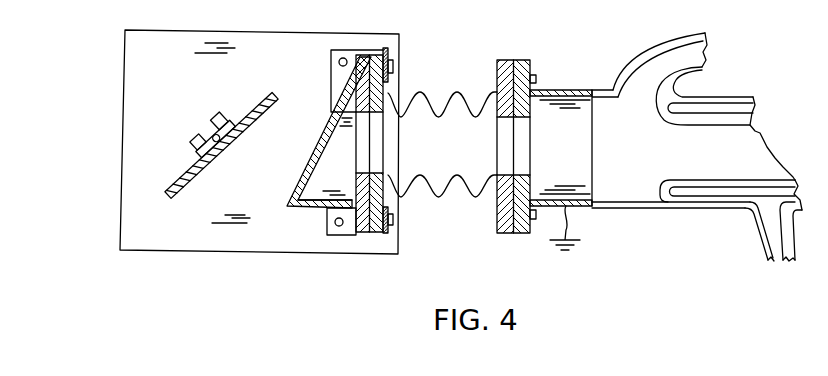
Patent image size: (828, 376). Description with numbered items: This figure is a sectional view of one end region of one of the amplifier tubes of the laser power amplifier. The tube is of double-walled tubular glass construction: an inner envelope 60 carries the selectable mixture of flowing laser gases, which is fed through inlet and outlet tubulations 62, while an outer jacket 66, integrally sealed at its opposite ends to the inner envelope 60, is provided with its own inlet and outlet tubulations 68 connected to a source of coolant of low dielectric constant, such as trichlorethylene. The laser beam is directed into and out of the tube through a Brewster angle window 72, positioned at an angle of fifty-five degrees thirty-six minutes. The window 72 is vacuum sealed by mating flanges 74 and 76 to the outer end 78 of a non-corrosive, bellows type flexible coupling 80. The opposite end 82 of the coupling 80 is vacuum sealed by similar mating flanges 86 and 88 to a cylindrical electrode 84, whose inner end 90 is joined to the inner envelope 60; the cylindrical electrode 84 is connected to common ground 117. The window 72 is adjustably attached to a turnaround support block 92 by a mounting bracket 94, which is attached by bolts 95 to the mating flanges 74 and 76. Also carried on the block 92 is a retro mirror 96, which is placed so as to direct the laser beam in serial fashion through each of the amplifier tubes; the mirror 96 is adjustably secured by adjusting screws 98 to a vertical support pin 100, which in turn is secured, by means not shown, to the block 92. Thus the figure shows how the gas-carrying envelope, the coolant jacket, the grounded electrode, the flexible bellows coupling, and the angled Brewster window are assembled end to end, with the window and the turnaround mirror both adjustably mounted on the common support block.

The inner envelope 60 is at (683, 180).
The inlet and outlet tubulations 62 is at (652, 38).
The outer jacket 66 is at (737, 208).
The inlet and outlet tubulations 68 is at (763, 252).
The Brewster angle window 72 is at (318, 149).
The mating flange 74 is at (362, 233).
The mating flange 76 is at (385, 234).
The outer end 78 is at (388, 84).
The bellows type flexible coupling 80 is at (452, 197).
The opposite end 82 is at (497, 203).
The cylindrical electrode 84 is at (557, 92).
The mating flange 86 is at (508, 233).
The mating flange 88 is at (522, 233).
The inner end 90 is at (603, 82).
The turnaround support block 92 is at (125, 62).
The mounting bracket 94 is at (331, 52).
The bolts 95 is at (393, 68).
The retro mirror 96 is at (274, 96).
The adjusting screws 98 is at (215, 116).
The vertical support pin 100 is at (196, 136).
The common ground 117 is at (565, 238).